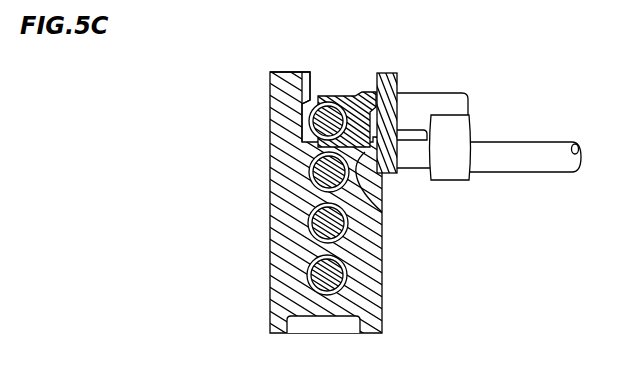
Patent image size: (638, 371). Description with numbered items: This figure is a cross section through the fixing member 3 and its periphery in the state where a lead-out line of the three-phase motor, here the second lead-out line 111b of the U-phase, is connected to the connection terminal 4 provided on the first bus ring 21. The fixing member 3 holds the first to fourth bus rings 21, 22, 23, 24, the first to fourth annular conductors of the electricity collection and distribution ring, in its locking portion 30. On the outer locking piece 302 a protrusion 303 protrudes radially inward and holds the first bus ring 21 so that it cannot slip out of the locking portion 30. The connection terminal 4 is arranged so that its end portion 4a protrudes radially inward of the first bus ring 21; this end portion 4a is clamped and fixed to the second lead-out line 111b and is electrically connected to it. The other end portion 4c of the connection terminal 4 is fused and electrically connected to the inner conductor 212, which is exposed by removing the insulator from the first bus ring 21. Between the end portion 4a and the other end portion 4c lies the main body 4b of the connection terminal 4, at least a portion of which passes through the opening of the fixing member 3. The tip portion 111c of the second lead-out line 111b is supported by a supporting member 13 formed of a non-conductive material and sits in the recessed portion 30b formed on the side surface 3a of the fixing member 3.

The fixing member 3 is at (378, 48).
The side surface 3a is at (383, 282).
The locking portion 30 is at (322, 52).
The recessed portion 30b is at (387, 172).
The outer locking piece 302 is at (285, 72).
The protrusion 303 is at (303, 110).
The first bus ring 21 is at (259, 119).
The inner conductor 212 is at (315, 127).
The second bus ring 22 is at (322, 175).
The third bus ring 23 is at (322, 223).
The fourth bus ring 24 is at (322, 276).
The connection terminal 4 is at (481, 88).
The end portion 4a is at (468, 118).
The main body 4b is at (428, 97).
The other end portion 4c is at (328, 97).
The supporting member 13 is at (388, 73).
The second lead-out line 111b is at (513, 160).
The tip portion 111c is at (380, 200).